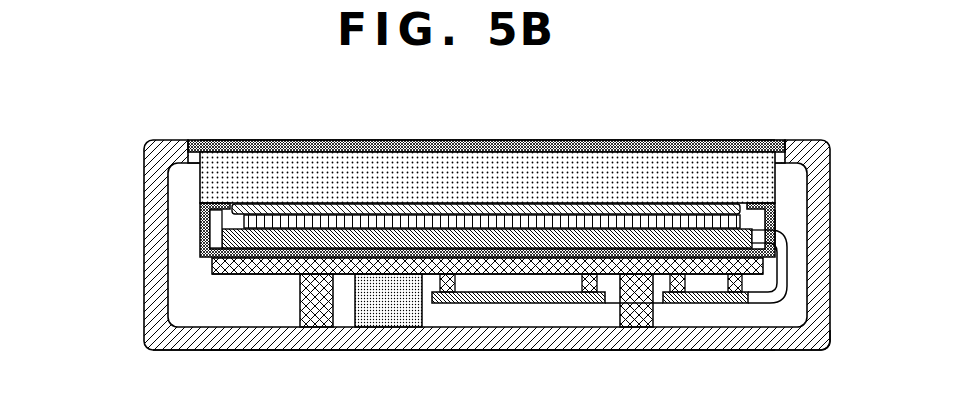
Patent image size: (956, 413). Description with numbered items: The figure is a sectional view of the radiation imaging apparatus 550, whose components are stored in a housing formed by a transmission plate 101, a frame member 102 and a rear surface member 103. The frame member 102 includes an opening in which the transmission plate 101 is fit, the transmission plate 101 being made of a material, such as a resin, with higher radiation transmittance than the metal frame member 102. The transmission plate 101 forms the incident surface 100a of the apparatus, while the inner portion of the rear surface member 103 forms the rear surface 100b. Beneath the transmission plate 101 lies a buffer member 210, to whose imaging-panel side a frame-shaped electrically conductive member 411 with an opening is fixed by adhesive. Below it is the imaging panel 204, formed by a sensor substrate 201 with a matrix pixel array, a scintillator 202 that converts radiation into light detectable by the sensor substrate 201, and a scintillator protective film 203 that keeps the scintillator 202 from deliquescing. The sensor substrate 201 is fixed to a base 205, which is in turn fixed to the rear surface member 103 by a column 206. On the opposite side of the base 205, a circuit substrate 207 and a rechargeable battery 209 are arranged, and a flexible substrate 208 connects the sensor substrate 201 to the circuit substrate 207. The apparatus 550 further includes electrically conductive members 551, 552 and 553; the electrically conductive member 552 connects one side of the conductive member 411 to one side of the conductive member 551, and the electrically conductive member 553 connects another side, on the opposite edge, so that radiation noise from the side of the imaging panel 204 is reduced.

The radiation imaging apparatus 550 is at (143, 80).
The frame member 102 is at (150, 147).
The rear surface member 103 is at (150, 317).
The transmission plate 101 is at (410, 140).
The incident surface 100a is at (543, 140).
The rear surface 100b is at (577, 350).
The buffer member 210 is at (360, 177).
The electrically conductive member 411 is at (222, 203).
The electrically conductive member 553 is at (778, 220).
The imaging panel 204 is at (75, 182).
The scintillator protective film 203 is at (232, 210).
The scintillator 202 is at (244, 221).
The sensor substrate 201 is at (225, 238).
The electrically conductive member 552 is at (208, 238).
The electrically conductive member 551 is at (222, 268).
The base 205 is at (238, 274).
The column 206 is at (317, 293).
The rechargeable battery 209 is at (382, 297).
The circuit substrate 207 is at (510, 298).
The flexible substrate 208 is at (763, 303).